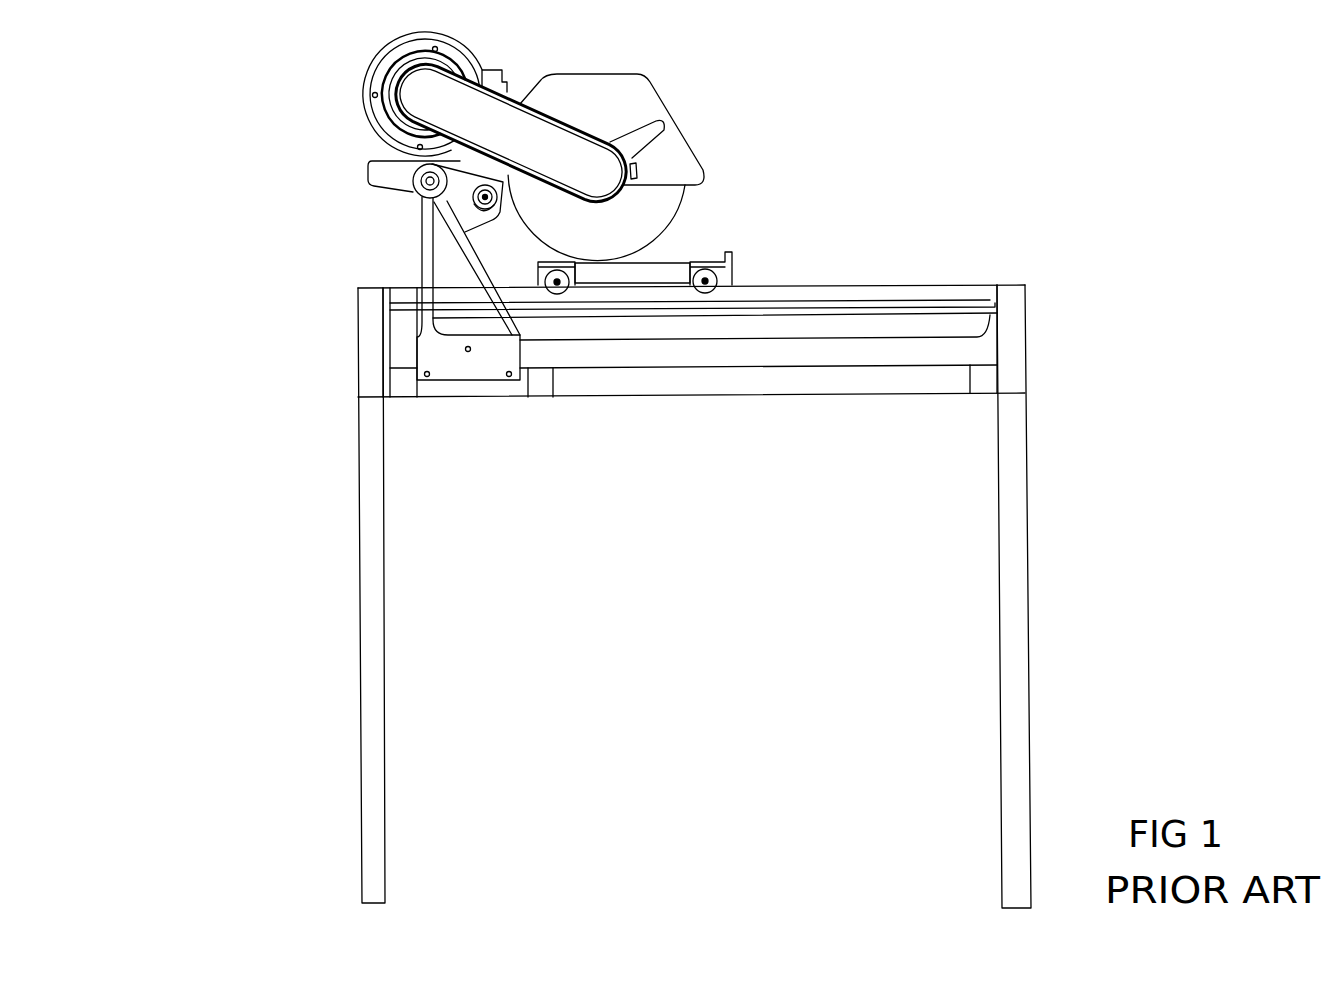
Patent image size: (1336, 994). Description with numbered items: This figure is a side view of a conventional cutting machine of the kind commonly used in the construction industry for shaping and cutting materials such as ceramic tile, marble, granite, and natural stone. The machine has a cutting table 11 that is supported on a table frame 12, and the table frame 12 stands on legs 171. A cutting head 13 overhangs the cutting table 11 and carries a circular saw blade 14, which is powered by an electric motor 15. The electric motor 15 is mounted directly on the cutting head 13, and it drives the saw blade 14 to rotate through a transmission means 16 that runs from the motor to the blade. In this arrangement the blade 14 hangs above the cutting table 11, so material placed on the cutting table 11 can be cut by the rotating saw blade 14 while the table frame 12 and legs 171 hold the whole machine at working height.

The cutting table 11 is at (670, 275).
The table frame 12 is at (752, 352).
The cutting head 13 is at (458, 207).
The circular saw blade 14 is at (652, 225).
The electric motor 15 is at (363, 78).
The transmission means 16 is at (557, 145).
The legs 171 is at (368, 511).